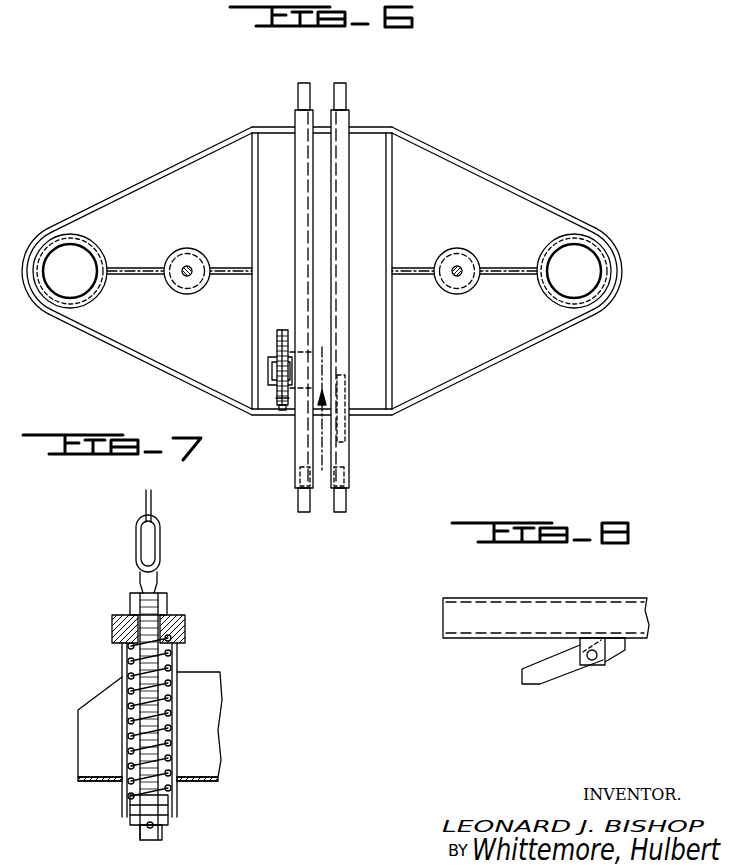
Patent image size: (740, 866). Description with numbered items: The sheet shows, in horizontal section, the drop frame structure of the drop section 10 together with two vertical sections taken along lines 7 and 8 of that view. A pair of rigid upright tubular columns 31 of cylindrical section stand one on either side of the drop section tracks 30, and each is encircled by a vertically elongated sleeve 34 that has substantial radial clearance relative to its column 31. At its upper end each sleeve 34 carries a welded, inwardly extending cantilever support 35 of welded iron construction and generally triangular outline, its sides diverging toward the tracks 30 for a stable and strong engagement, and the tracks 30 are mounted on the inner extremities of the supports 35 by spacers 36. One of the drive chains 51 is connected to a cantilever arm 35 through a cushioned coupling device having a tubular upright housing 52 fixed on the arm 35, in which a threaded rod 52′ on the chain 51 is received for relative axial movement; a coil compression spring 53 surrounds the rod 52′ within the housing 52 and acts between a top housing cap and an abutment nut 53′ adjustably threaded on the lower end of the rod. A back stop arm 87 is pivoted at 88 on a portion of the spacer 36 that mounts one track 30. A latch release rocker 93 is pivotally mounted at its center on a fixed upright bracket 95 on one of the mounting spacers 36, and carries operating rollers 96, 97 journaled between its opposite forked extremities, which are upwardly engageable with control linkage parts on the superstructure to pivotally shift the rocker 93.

In FIG. 6, the drop section 10 is at (527, 350).
In FIG. 6, the drop section tracks 30 is at (340, 272).
In FIG. 8, the drop section tracks 30 is at (622, 610).
In FIG. 6, the tubular columns 31 is at (100, 256).
In FIG. 6, the sleeves 34 is at (97, 297).
In FIG. 6, the cantilever supports 35 is at (543, 212).
In FIG. 7, the cantilever supports 35 is at (190, 782).
In FIG. 6, the spacers 36 is at (253, 197).
In FIG. 8, the spacers 36 is at (580, 647).
In FIG. 6, the tubular upright housing 52 is at (196, 257).
In FIG. 7, the tubular upright housing 52 is at (173, 665).
In FIG. 6, the latch release rocker 93 is at (277, 400).
In FIG. 6, the upright bracket 95 is at (272, 372).
In FIG. 6, the operating roller 96 is at (277, 337).
In FIG. 6, the operating roller 97 is at (283, 408).
In FIG. 6, the section line 7— 7 is at (517, 274).
In FIG. 6, the section line 8— 8 is at (373, 457).
In FIG. 7, the operating chain 51 is at (160, 558).
In FIG. 7, the threaded rod 52′ is at (148, 663).
In FIG. 7, the coil compression spring 53 is at (162, 735).
In FIG. 7, the abutment nut 53′ is at (167, 822).
In FIG. 8, the back stop arm 87 is at (570, 662).
In FIG. 8, the pivot 88 is at (594, 659).